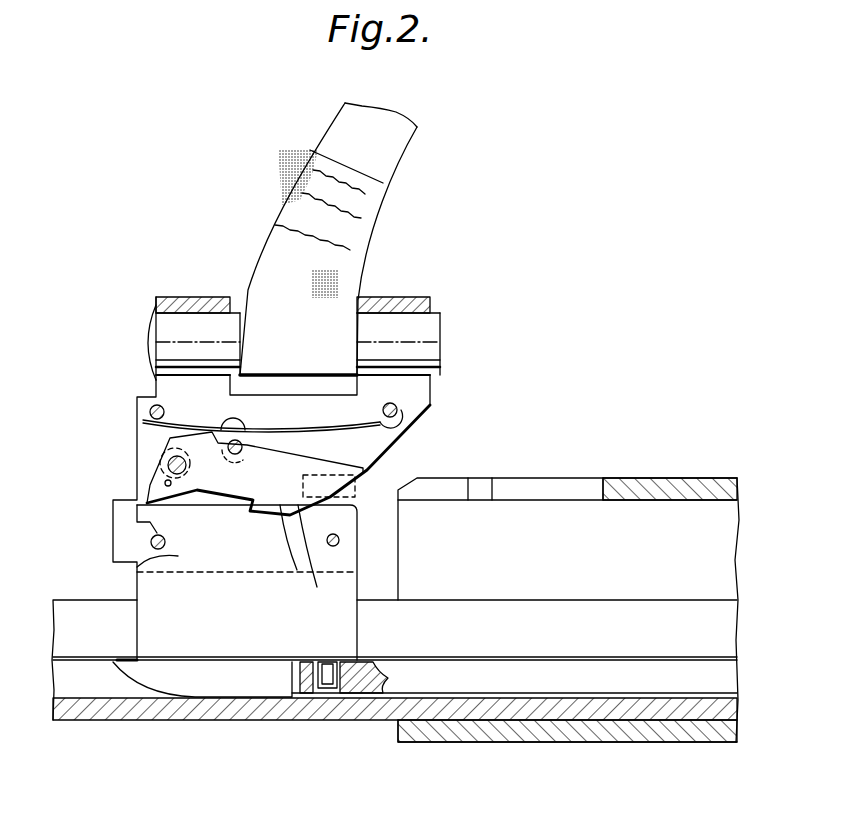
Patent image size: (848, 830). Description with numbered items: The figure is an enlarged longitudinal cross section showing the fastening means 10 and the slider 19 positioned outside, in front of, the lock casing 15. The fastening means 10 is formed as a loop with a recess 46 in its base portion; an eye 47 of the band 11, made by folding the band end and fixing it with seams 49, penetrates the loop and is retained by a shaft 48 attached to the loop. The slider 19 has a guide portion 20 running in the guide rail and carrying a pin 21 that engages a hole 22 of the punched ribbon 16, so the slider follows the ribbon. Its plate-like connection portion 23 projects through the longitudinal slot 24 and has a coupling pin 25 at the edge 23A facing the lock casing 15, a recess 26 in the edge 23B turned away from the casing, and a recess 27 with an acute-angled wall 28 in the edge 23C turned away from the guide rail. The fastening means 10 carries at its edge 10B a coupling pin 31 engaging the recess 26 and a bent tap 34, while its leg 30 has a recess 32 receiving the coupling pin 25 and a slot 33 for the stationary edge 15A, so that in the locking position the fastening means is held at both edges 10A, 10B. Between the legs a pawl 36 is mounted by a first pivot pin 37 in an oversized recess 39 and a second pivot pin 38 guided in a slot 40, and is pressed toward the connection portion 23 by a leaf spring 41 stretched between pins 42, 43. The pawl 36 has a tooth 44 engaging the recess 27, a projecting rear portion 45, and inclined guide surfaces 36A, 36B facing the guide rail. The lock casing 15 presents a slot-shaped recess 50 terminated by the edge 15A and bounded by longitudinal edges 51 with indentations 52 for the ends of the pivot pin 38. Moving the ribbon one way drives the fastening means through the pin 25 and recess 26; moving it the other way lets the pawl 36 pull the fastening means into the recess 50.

The fastening means 10 is at (185, 300).
The edge of the fastening means 10A is at (365, 566).
The edge of the fastening means 10B is at (150, 390).
The band 11 is at (398, 132).
The lock casing 15 is at (535, 735).
The stationary edge 15A is at (615, 488).
The punched ribbon 16 is at (490, 680).
The slider 19 is at (147, 641).
The guide portion 20 is at (255, 690).
The pin 21 is at (325, 688).
The hole 22 is at (363, 690).
The connection portion 23 is at (250, 612).
The edge of the connection portion 23A is at (362, 638).
The edge of the connection portion 23B is at (135, 630).
The edge of the connection portion 23C is at (228, 508).
The longitudinal slot 24 is at (63, 600).
The coupling pin 25 is at (340, 537).
The recess 26 is at (166, 551).
The recess 27 is at (338, 498).
The wall 28 is at (283, 518).
The leg 30 is at (430, 386).
The coupling pin 31 is at (135, 566).
The recess 32 is at (340, 544).
The slot 33 is at (335, 456).
The bent tap 34 is at (122, 533).
The pawl 36 is at (288, 458).
The inclined guide surface 36A is at (317, 561).
The inclined guide surface 36B is at (205, 493).
The pivot pin 37 is at (242, 452).
The pivot pin 38 is at (166, 462).
The recess 39 is at (248, 428).
The slot 40 is at (163, 483).
The leaf spring 41 is at (366, 419).
The pin 42 is at (405, 409).
The pin 43 is at (164, 408).
The tooth 44 is at (286, 547).
The rear portion 45 is at (150, 501).
The recess 46 is at (243, 378).
The eye 47 is at (330, 355).
The shaft 48 is at (167, 330).
The seam 49 is at (351, 249).
The slot-shaped recess 50 is at (570, 481).
The longitudinal edge 51 is at (527, 488).
The indentation 52 is at (483, 481).